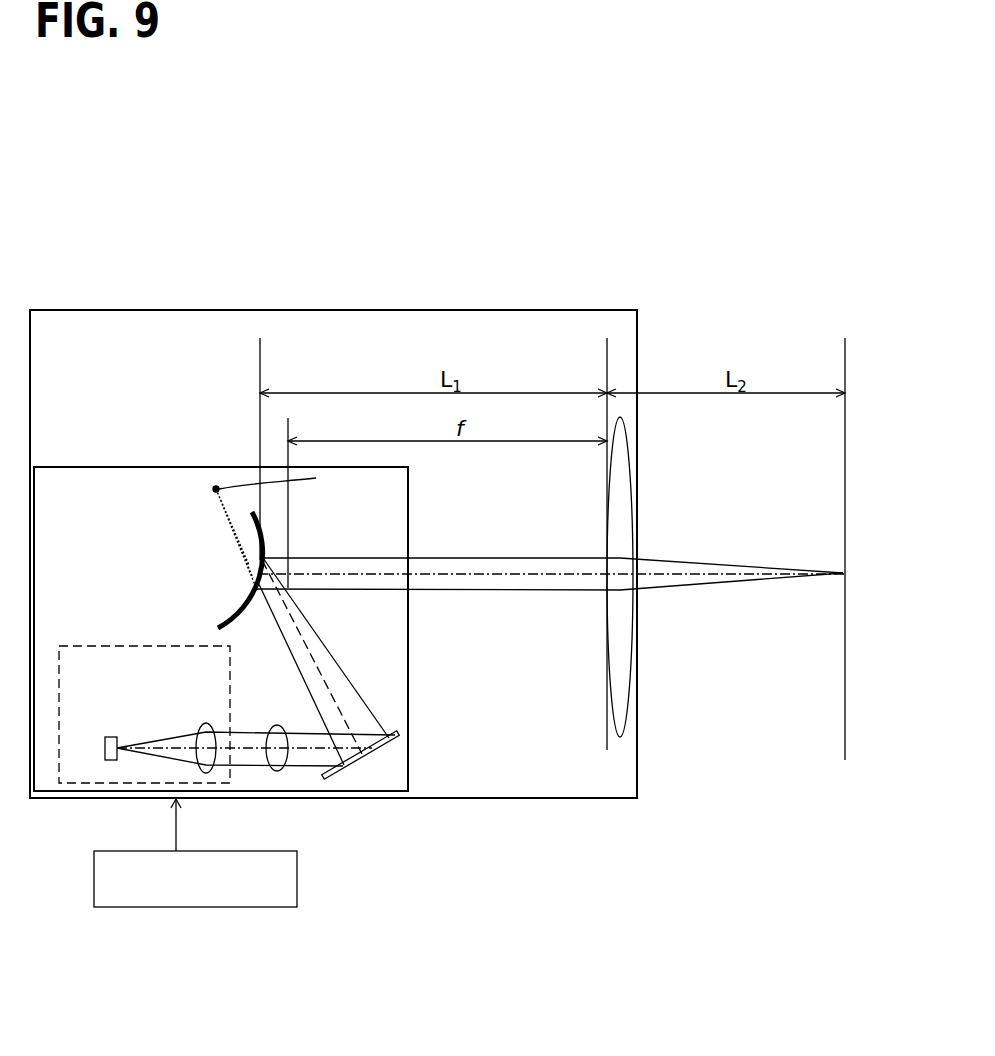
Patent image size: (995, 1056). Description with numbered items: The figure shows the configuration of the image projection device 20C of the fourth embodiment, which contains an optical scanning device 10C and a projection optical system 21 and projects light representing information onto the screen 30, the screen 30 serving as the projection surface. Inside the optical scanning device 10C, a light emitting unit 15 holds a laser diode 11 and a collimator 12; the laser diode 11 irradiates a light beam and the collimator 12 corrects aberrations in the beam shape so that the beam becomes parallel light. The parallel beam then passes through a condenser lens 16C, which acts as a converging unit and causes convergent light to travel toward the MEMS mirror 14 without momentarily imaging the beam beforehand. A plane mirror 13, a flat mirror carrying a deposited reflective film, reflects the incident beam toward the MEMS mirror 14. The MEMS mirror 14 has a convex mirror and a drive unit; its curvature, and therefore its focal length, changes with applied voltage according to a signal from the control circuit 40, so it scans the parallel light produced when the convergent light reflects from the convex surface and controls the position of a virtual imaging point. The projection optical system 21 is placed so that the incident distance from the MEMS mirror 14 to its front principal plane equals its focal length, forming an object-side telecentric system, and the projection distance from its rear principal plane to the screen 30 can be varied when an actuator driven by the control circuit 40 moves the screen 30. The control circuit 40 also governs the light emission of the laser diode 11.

The image projection device 20C is at (408, 310).
The screen 30 is at (843, 365).
The projection optical system 21 is at (637, 440).
The optical scanning device 10C is at (150, 467).
The MEMS mirror 14 is at (247, 603).
The light emitting unit 15 is at (100, 645).
The laser diode 11 is at (113, 737).
The collimator 12 is at (205, 723).
The condenser lens 16C is at (277, 725).
The plane mirror 13 is at (385, 745).
The control circuit 40 is at (268, 852).